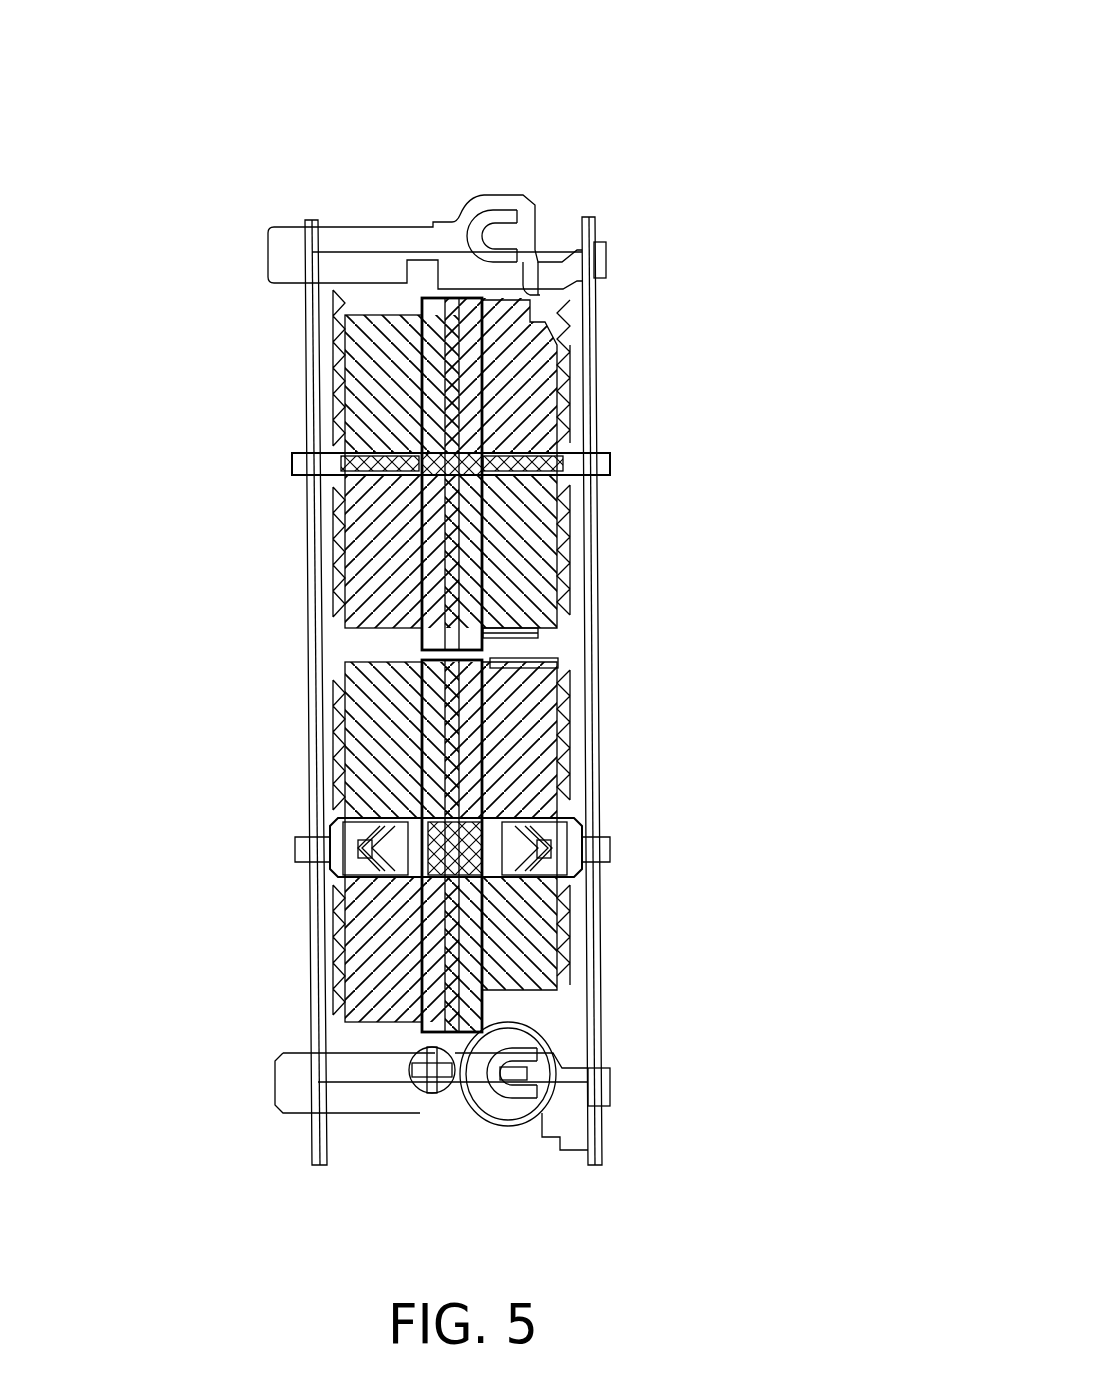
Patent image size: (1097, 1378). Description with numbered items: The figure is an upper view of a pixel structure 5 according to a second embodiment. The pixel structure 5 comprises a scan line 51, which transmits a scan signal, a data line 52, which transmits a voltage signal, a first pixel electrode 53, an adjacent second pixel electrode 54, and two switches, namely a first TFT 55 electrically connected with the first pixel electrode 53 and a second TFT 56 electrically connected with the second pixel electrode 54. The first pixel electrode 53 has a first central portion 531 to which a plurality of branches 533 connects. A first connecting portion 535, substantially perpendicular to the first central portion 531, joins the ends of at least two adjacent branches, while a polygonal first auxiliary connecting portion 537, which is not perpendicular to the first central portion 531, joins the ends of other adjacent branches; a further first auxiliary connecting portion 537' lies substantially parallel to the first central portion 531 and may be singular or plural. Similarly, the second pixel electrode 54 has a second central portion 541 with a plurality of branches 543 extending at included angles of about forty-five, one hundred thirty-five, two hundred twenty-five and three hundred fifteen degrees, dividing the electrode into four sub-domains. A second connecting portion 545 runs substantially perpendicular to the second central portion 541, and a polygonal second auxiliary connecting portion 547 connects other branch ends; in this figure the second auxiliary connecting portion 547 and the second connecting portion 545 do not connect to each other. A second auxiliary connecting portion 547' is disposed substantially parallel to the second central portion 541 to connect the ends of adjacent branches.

The pixel structure 5 is at (592, 88).
The scan line 51 is at (603, 1088).
The data line 52 is at (598, 592).
The first pixel electrode 53 is at (330, 284).
The second pixel electrode 54 is at (335, 1040).
The first TFT 55 is at (418, 1087).
The second TFT 56 is at (507, 1127).
The first central portion 531 is at (482, 425).
The plurality of branches 533 is at (540, 515).
The first connecting portion 535 is at (535, 640).
The first auxiliary connecting portion 537 is at (300, 486).
The first auxiliary connecting portion 537' is at (453, 453).
The second central portion 541 is at (487, 958).
The plurality of branches 543 is at (533, 922).
The second connecting portion 545 is at (530, 670).
The second auxiliary connecting portion 547 is at (297, 842).
The second auxiliary connecting portion 547' is at (237, 950).